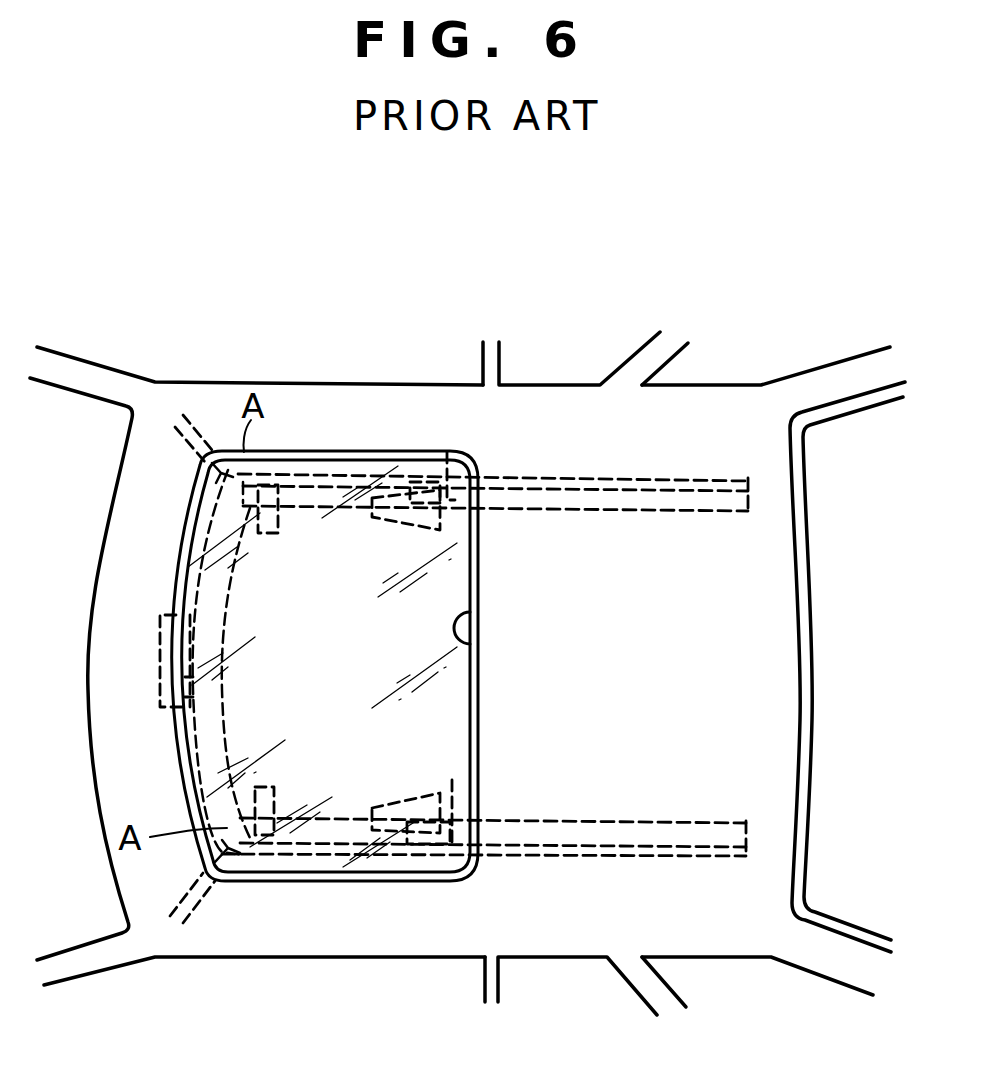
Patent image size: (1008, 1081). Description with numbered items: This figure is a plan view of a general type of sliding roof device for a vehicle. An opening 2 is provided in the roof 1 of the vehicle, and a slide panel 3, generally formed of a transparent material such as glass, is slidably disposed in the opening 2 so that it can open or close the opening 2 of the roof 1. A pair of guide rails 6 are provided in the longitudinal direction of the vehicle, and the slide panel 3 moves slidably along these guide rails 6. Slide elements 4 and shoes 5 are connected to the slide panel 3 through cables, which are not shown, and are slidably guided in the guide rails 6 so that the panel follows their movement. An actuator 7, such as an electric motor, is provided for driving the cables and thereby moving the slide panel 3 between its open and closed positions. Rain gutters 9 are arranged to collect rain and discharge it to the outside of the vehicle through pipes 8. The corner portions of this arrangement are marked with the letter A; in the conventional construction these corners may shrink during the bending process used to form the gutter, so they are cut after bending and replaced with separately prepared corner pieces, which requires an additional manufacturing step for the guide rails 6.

The roof 1 is at (548, 403).
The opening 2 is at (473, 643).
The slide panel 3 is at (352, 678).
The slide elements 4 is at (284, 482).
The shoes 5 is at (447, 452).
The guide rails 6 is at (655, 503).
The actuator 7 is at (160, 680).
The pipes 8 is at (206, 449).
The rain gutters 9 is at (721, 478).